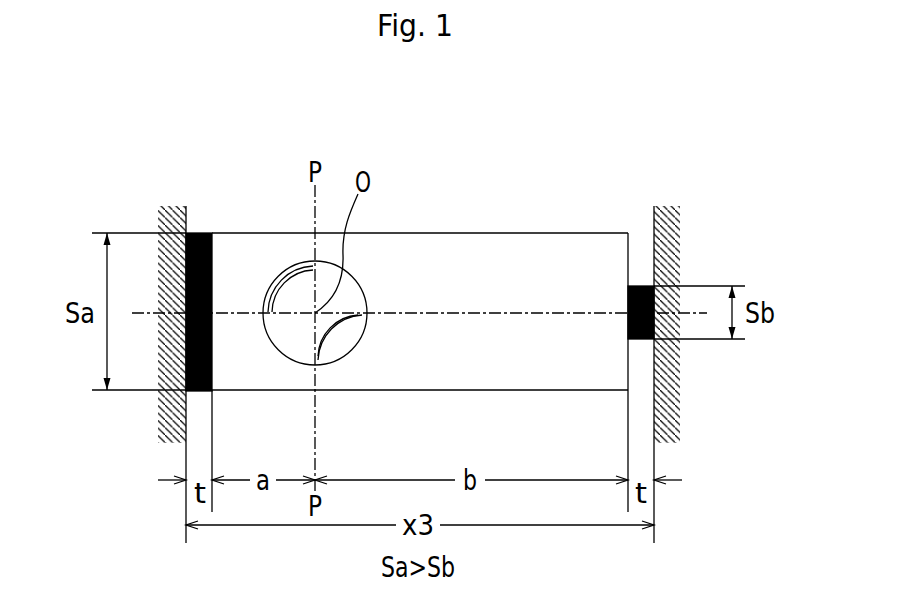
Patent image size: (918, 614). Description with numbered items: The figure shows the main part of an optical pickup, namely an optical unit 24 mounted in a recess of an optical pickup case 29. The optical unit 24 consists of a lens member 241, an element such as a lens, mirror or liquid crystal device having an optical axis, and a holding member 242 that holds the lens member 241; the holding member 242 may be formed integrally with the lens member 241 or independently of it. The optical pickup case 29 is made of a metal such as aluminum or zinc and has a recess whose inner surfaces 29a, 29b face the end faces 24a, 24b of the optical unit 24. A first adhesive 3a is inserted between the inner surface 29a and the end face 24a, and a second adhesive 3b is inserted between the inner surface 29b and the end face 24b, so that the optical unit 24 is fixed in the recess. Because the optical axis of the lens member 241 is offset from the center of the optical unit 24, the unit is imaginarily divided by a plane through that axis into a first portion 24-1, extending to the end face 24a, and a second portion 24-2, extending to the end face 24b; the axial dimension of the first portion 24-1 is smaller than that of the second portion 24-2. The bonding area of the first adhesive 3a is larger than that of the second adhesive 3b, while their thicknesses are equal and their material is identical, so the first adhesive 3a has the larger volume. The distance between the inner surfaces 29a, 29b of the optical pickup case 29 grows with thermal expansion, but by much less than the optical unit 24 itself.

The optical unit 24 is at (628, 130).
The end face of the optical unit 24a is at (203, 233).
The end face of the optical unit 24b is at (628, 243).
The lens member 241 is at (359, 278).
The holding member 242 is at (511, 240).
The first portion 24-1 is at (262, 391).
The second portion 24-2 is at (534, 385).
The optical pickup case 29 is at (419, 283).
The inner surface of the recess 29a is at (186, 207).
The inner surface of the recess 29b is at (655, 207).
The first adhesive 3a is at (193, 392).
The second adhesive 3b is at (639, 340).